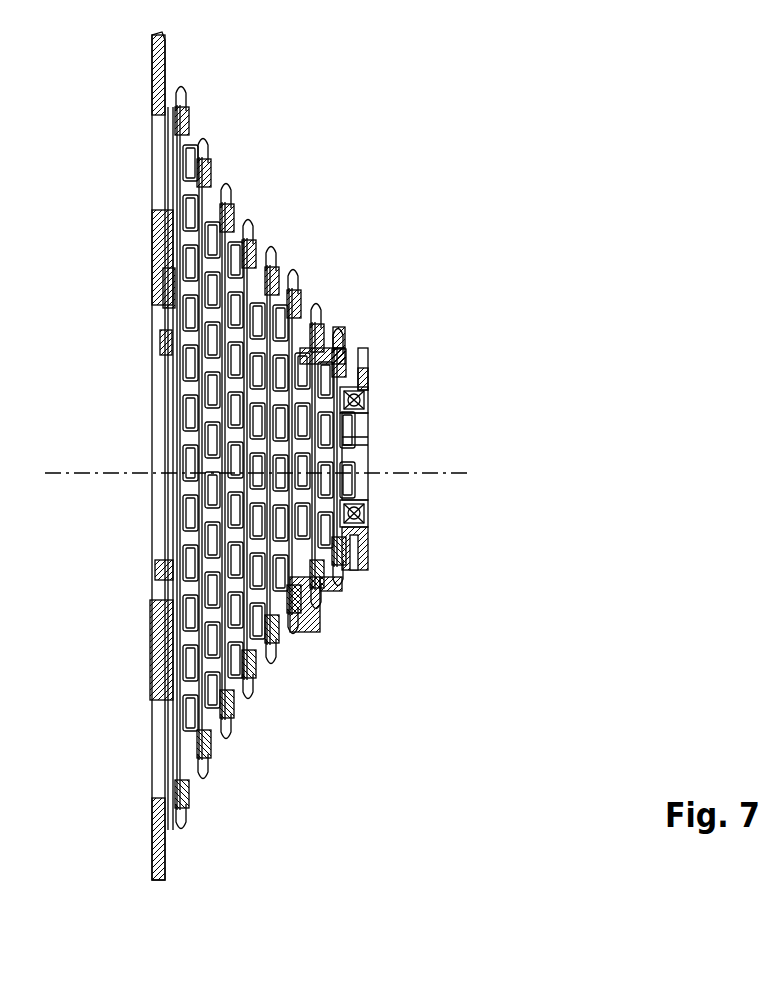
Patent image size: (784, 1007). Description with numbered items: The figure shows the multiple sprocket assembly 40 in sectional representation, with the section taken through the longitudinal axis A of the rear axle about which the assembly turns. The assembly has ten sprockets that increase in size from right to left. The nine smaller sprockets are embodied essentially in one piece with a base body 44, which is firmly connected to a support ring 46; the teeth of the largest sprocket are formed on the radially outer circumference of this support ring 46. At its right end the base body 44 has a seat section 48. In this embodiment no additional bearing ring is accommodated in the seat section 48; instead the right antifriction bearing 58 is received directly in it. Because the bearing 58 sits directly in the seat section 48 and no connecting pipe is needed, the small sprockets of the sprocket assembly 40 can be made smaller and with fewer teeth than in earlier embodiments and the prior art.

The multiple sprocket assembly 40 is at (293, 680).
The base body 44 is at (303, 595).
The support ring 46 is at (148, 283).
The seat section 48 is at (368, 388).
The right antifriction bearing 58 is at (368, 508).
The longitudinal axis A is at (60, 473).